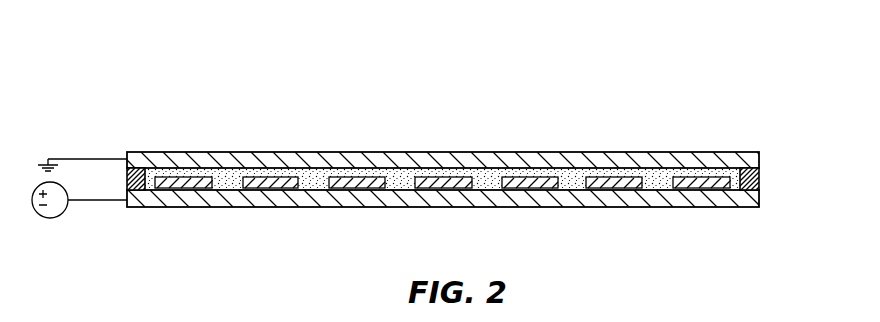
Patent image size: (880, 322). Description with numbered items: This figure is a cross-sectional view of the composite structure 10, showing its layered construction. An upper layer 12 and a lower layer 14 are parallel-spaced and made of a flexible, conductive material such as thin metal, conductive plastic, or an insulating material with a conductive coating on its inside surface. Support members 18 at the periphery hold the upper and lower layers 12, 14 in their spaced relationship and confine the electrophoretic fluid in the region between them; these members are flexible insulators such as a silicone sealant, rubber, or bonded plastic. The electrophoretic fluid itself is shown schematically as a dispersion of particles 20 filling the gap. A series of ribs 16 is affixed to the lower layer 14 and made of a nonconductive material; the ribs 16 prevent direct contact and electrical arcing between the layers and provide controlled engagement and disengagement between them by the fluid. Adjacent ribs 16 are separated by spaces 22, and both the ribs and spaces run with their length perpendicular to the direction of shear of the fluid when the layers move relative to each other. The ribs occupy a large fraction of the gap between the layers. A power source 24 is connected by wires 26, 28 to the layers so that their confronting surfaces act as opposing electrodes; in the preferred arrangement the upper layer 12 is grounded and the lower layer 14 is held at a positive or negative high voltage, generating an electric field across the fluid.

The composite structure 10 is at (243, 131).
The upper layer 12 is at (435, 150).
The lower layer 14 is at (490, 207).
The ribs 16 is at (188, 190).
The support members 18 is at (127, 178).
The particles 20 is at (318, 172).
The spaces 22 is at (227, 190).
The power source 24 is at (50, 218).
The wire 26 is at (88, 159).
The wire 28 is at (92, 201).